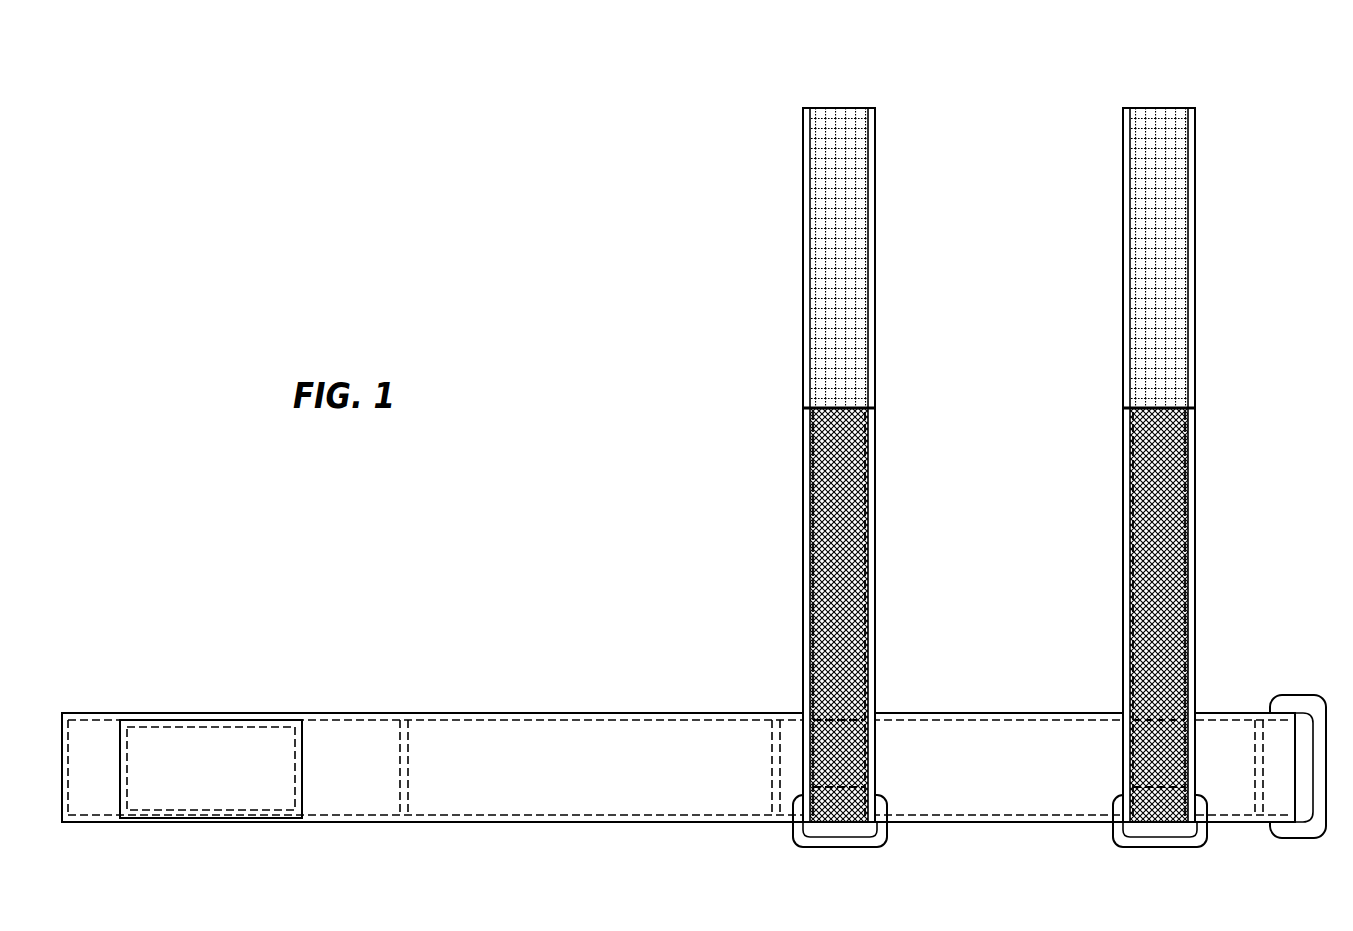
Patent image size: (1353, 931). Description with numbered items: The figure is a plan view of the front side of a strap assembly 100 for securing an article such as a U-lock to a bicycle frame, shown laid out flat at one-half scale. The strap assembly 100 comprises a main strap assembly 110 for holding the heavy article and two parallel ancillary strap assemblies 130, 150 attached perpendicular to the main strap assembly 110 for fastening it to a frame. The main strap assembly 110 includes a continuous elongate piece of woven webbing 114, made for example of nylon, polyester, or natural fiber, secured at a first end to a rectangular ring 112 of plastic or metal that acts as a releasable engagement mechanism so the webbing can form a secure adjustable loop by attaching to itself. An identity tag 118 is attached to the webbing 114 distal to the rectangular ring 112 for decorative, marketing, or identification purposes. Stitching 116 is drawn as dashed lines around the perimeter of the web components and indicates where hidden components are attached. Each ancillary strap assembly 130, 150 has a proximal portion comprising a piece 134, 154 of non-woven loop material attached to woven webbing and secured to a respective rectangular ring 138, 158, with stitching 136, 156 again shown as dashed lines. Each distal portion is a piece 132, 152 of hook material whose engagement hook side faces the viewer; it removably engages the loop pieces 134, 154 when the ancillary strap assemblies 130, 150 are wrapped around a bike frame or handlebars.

The strap assembly 100 is at (951, 60).
The main strap assembly 110 is at (412, 706).
The rectangular ring 112 is at (1313, 840).
The woven webbing 114 is at (565, 793).
The stitching 116 is at (610, 720).
The identity tag 118 is at (247, 728).
The ancillary strap assembly 130 is at (886, 339).
The hook material piece 132 is at (848, 192).
The loop material piece 134 is at (848, 500).
The stitching 136 is at (875, 530).
The rectangular ring 138 is at (888, 838).
The ancillary strap assembly 150 is at (1205, 328).
The hook material piece 152 is at (1160, 192).
The loop material piece 154 is at (1170, 503).
The stitching 156 is at (1195, 555).
The rectangular ring 158 is at (1112, 838).